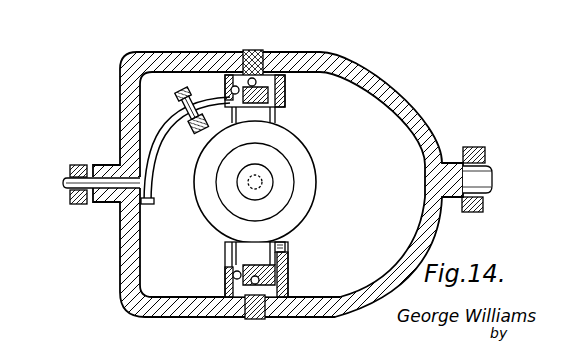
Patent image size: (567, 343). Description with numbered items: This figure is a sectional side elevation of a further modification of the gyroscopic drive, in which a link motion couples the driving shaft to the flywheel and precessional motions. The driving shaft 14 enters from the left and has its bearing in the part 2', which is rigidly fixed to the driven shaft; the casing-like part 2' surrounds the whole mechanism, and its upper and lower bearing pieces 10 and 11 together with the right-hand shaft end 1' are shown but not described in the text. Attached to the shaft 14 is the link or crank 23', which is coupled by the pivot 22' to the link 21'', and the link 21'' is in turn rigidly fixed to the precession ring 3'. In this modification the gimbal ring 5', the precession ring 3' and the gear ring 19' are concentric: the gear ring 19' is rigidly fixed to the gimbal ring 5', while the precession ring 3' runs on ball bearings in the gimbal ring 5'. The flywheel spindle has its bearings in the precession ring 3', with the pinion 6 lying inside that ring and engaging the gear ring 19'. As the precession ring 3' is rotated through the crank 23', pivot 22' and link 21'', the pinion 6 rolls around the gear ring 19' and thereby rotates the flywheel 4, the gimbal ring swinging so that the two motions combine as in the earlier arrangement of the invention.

The part 2' is at (278, 184).
The driving shaft 14 is at (65, 178).
The drive shaft 1' is at (481, 179).
The upper bearing cap 10 is at (262, 53).
The flywheel 4 is at (318, 176).
The pinion 6 is at (268, 172).
The gear ring 19' is at (271, 269).
The precession ring 3' is at (231, 262).
The gimbal ring 5' is at (229, 279).
The lower bearing cap 11 is at (252, 313).
The link or crank 23' is at (185, 150).
The pivot 22' is at (180, 124).
The link 21'' is at (193, 143).